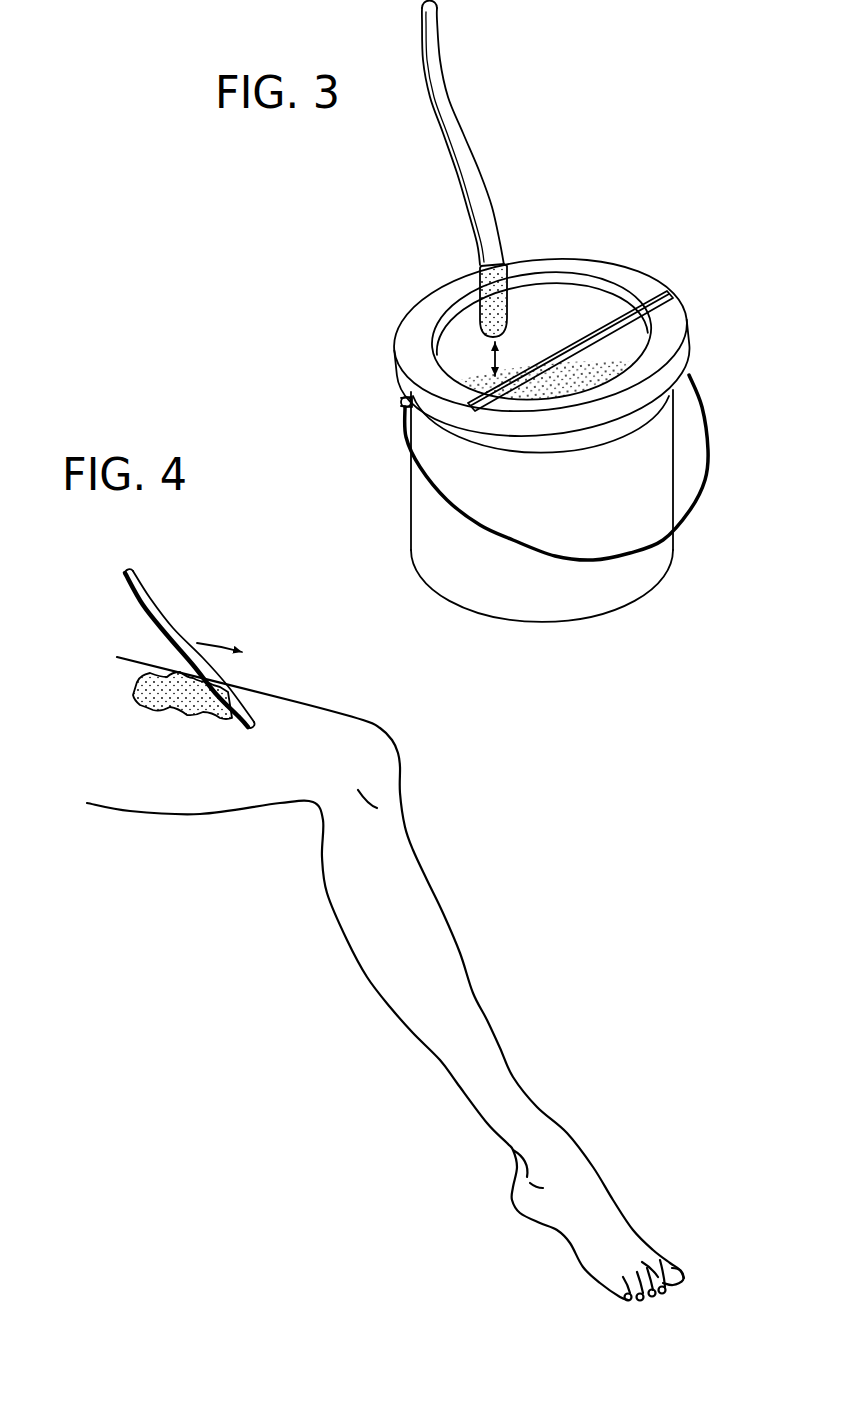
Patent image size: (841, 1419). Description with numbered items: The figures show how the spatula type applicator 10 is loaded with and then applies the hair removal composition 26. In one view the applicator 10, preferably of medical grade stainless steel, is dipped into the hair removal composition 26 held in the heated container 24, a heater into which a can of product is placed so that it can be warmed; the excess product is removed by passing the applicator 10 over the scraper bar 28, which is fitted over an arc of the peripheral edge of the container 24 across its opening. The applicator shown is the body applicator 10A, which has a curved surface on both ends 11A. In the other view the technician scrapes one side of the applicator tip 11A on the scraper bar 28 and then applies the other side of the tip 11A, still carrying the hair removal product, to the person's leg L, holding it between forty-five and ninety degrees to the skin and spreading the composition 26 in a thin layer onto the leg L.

In FIG. 3, the applicator 10 is at (473, 135).
In FIG. 4, the applicator 10 is at (186, 615).
In FIG. 3, the body applicator 10A is at (465, 160).
In FIG. 4, the body applicator 10A is at (160, 622).
In FIG. 3, the applicator tip 11A is at (432, 25).
In FIG. 4, the applicator tip 11A is at (125, 582).
In FIG. 3, the heated container 24 is at (586, 250).
In FIG. 3, the hair removal composition 26 is at (483, 318).
In FIG. 4, the hair removal composition 26 is at (177, 700).
In FIG. 3, the scraper bar 28 is at (593, 337).
In FIG. 4, the leg L is at (275, 684).